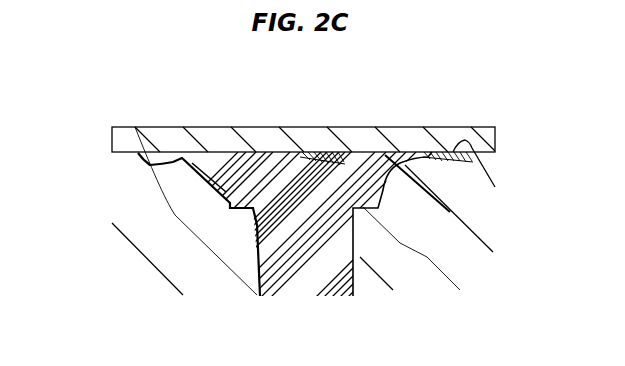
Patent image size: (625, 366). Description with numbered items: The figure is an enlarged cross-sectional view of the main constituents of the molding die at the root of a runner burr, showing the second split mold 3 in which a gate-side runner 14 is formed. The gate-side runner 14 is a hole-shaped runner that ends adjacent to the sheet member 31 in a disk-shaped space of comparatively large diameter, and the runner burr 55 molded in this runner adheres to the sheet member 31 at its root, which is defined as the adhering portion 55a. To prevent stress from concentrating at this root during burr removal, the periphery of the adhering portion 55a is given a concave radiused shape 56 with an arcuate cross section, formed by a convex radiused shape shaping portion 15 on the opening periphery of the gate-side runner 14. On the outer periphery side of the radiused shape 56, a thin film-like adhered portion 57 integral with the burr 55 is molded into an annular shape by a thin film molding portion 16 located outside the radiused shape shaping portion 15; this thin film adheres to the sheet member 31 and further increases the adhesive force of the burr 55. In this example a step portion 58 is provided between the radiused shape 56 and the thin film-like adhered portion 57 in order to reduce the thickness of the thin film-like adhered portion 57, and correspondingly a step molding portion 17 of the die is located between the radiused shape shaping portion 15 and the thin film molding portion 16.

The second split mold 3 is at (167, 258).
The gate-side runner 14 is at (348, 232).
The radiused shape shaping portion 15 is at (392, 163).
The thin film molding portion 16 is at (463, 150).
The step molding portion 17 is at (417, 153).
The sheet member 31 is at (490, 137).
The runner burr 55 is at (305, 270).
The adhering portion 55a is at (308, 185).
The radiused shape 56 is at (228, 193).
The thin film-like adhered portion 57 is at (130, 172).
The step portion 58 is at (177, 162).